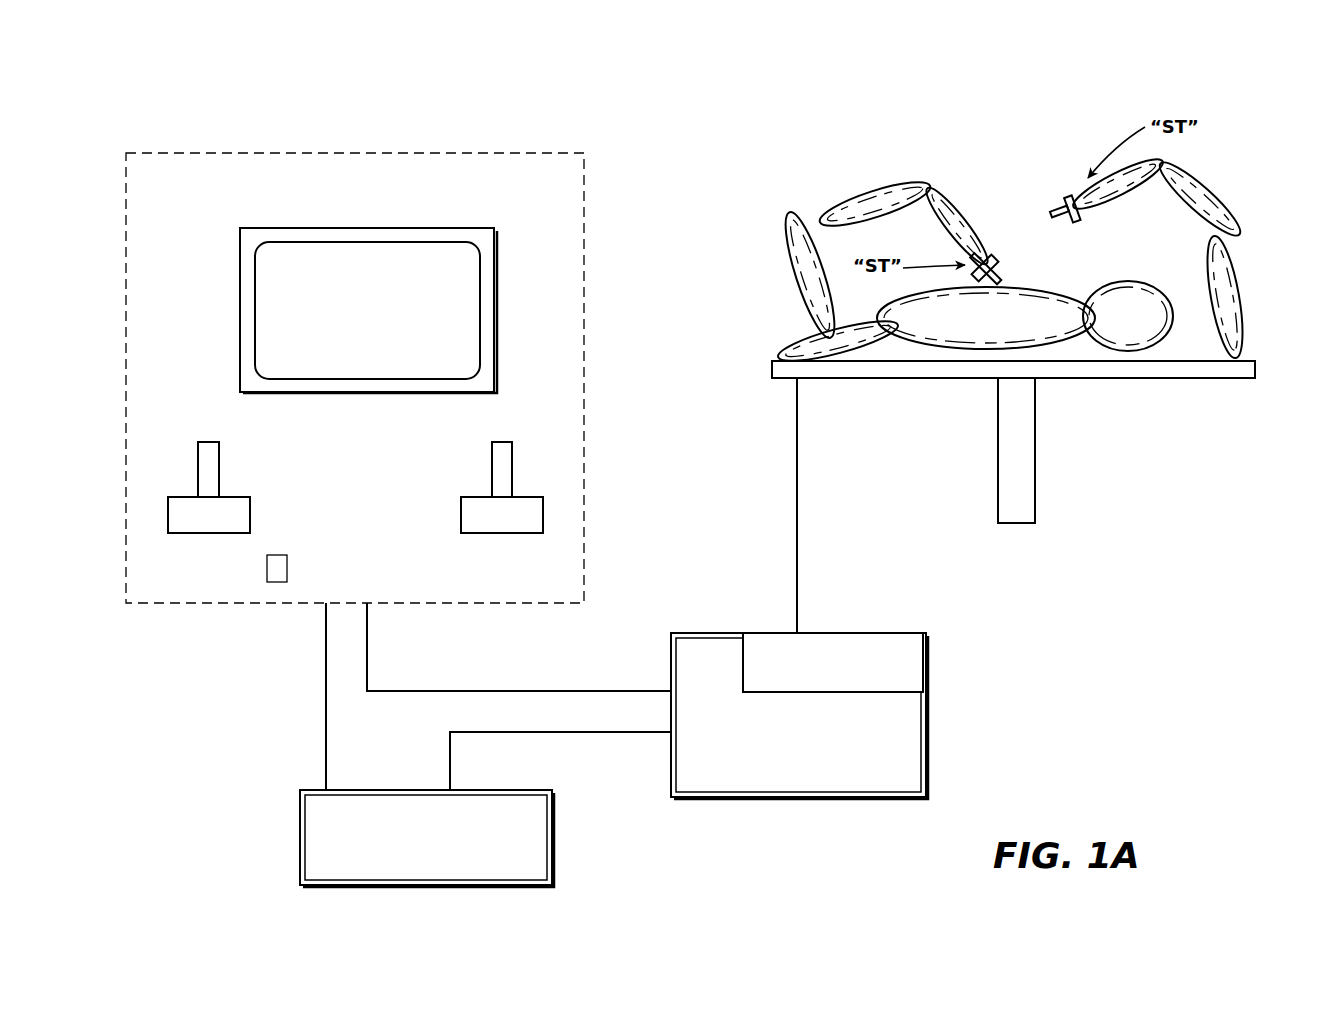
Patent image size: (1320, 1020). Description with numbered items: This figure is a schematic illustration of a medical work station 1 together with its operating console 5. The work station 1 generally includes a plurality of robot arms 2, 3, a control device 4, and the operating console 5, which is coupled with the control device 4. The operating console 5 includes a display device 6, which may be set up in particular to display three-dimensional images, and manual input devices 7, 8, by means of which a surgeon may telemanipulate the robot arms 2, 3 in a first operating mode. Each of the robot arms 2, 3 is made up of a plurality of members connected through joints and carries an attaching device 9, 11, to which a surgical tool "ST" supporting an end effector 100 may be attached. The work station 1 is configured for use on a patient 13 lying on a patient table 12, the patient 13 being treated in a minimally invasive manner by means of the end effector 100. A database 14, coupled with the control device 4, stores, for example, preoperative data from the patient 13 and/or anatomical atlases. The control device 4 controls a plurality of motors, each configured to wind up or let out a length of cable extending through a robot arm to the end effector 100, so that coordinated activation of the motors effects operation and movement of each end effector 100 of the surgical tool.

The medical work station 1 is at (1122, 676).
The robot arm 2 is at (830, 162).
The robot arm 3 is at (1232, 170).
The control device 4 is at (799, 716).
The operating console 5 is at (205, 105).
The display device 6 is at (368, 310).
The manual input device 7 is at (210, 520).
The manual input device 8 is at (512, 520).
The attaching device 9 is at (988, 255).
The attaching device 11 is at (1068, 196).
The patient table 12 is at (933, 370).
The patient 13 is at (1032, 324).
The database 14 is at (427, 838).
The end effector 100 is at (996, 262).